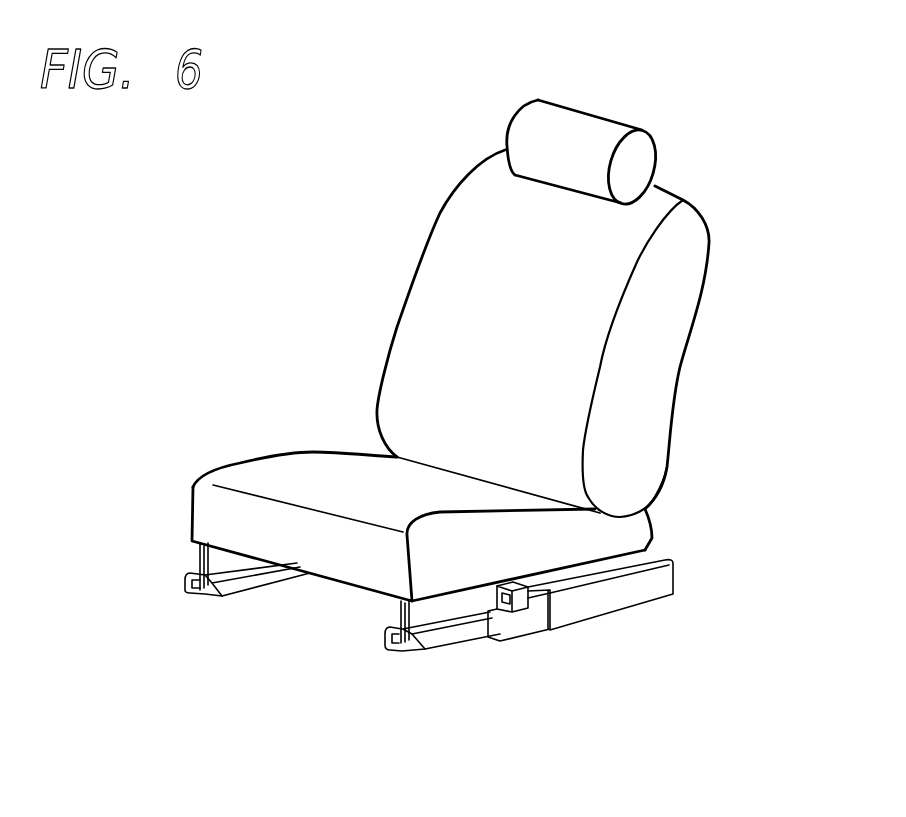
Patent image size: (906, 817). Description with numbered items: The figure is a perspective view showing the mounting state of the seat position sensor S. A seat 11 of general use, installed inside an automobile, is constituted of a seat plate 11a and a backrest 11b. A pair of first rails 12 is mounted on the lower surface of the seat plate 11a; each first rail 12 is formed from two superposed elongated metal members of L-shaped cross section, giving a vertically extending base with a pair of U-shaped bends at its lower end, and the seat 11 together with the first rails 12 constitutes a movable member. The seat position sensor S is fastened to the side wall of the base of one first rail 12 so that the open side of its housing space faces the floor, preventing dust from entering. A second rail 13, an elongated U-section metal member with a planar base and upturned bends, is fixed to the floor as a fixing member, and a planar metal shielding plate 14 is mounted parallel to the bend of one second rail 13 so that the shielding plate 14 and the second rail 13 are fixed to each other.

The seat 11 is at (490, 350).
The seat plate 11a is at (303, 447).
The backrest 11b is at (697, 303).
The first rail 12 is at (198, 596).
The second rail 13 is at (536, 639).
The shielding plate 14 is at (680, 583).
The seat position sensor S is at (463, 640).